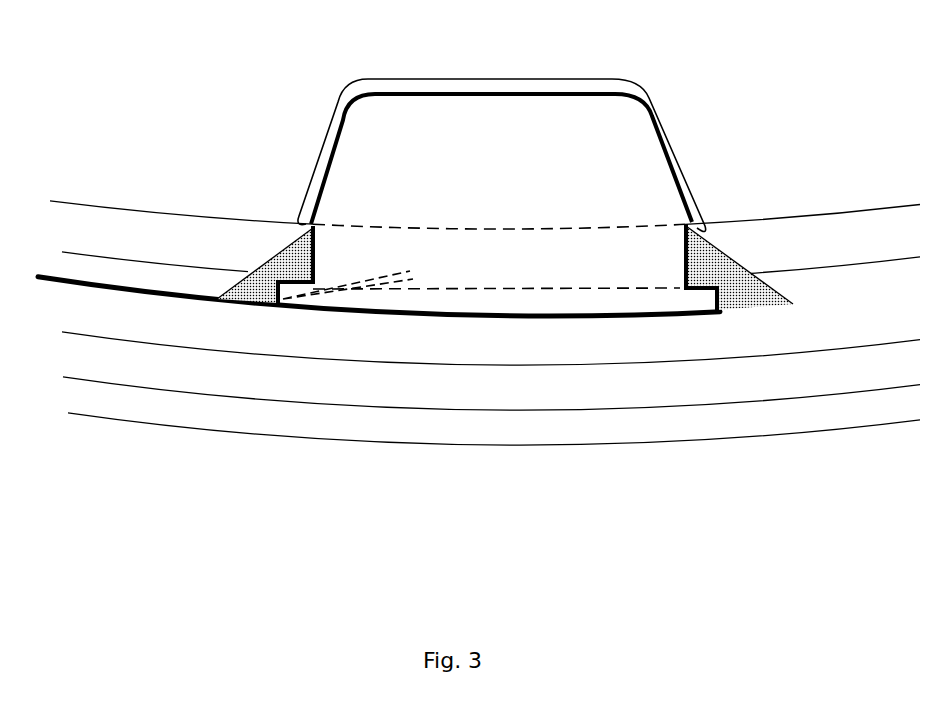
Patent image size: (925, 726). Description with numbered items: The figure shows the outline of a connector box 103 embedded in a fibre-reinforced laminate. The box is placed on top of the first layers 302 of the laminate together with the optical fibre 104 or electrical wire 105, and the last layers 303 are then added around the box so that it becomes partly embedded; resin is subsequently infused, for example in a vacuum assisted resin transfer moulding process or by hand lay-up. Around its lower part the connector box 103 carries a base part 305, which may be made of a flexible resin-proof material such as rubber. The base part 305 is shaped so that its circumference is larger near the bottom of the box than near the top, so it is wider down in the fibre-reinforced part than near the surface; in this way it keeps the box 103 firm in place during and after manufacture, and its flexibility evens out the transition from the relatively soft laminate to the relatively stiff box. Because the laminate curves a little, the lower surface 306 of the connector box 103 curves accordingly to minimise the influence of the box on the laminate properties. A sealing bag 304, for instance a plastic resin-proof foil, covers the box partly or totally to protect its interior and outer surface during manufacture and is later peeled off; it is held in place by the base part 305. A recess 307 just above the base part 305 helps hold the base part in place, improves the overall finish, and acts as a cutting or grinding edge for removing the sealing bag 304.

The connector box 103 is at (499, 125).
The first layers 302 is at (428, 425).
The last layers 303 is at (197, 242).
The sealing bag 304 is at (338, 97).
The base part 305 is at (287, 250).
The lower surface 306 is at (558, 318).
The recess 307 is at (702, 212).
The optical fibre 104 is at (375, 395).
The electrical wire 105 is at (190, 303).